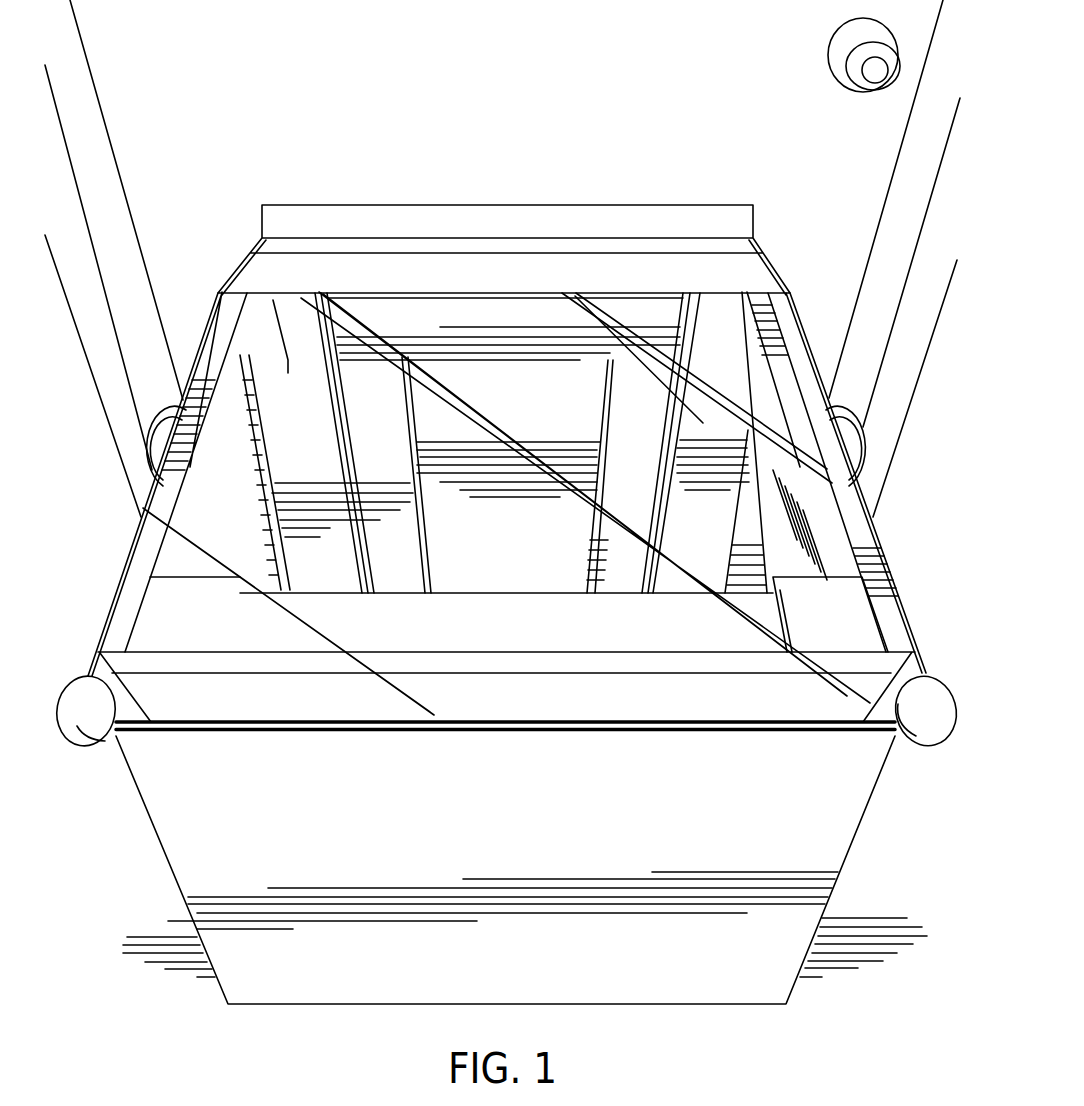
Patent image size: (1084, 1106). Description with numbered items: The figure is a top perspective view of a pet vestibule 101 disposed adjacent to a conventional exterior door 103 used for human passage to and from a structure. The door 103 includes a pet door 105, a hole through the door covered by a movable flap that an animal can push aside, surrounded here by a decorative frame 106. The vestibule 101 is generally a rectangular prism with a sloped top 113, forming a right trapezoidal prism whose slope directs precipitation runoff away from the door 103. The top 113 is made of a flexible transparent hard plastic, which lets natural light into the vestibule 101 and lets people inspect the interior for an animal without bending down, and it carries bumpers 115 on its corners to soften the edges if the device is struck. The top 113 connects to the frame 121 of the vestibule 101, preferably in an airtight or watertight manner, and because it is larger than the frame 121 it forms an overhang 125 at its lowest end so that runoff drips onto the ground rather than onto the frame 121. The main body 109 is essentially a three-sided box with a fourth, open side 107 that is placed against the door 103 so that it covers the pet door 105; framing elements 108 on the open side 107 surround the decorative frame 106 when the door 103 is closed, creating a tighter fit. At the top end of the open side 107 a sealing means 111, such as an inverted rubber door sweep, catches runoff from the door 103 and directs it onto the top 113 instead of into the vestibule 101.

The vestibule 101 is at (228, 327).
The door 103 is at (213, 169).
The pet door 105 is at (483, 403).
The decorative frame 106 is at (545, 330).
The open side 107 is at (717, 330).
The framing elements 108 is at (316, 407).
The main body 109 is at (287, 873).
The sealing means 111 is at (392, 218).
The top 113 is at (720, 418).
The bumpers 115 is at (77, 693).
The frame 121 is at (203, 487).
The overhang 125 is at (444, 700).